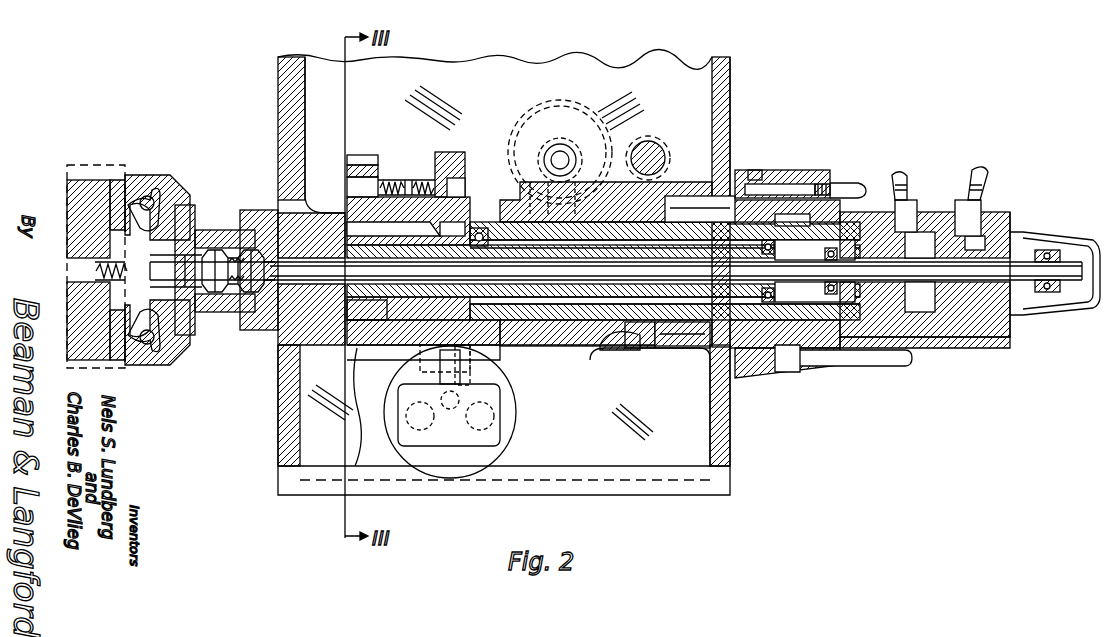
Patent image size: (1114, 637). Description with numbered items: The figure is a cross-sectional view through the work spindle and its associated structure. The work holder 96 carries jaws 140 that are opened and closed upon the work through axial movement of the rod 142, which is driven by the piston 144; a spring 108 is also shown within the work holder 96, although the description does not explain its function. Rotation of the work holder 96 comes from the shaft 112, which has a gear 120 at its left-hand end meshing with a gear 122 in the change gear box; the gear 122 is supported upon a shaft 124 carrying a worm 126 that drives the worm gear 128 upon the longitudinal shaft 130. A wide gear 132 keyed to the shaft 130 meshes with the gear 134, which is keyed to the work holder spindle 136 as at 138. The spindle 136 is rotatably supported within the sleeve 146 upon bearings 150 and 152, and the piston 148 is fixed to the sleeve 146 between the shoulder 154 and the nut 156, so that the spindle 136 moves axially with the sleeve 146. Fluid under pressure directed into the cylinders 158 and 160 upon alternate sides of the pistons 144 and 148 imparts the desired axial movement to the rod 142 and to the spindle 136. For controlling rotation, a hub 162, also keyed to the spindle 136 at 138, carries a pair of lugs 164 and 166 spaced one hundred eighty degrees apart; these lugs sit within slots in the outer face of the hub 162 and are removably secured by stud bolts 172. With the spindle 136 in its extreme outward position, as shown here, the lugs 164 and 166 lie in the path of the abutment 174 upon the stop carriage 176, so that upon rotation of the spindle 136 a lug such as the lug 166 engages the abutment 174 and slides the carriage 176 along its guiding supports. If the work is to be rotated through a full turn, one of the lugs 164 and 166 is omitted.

The work holder 96 is at (150, 172).
The spring 108 is at (85, 266).
The shaft 112 is at (662, 152).
The gear 120 is at (645, 136).
The gear 122 is at (515, 120).
The shaft 124 is at (575, 160).
The worm 126 is at (552, 148).
The worm gear 128 is at (575, 178).
The longitudinal shaft 130 is at (530, 196).
The wide gear 132 is at (340, 330).
The gear 134 is at (362, 155).
The work holder spindle 136 is at (250, 312).
The key 138 is at (465, 214).
The jaws 140 is at (67, 195).
The rod 142 is at (1030, 300).
The piston 144 is at (955, 200).
The sleeve 146 is at (580, 346).
The piston 148 is at (640, 348).
The bearing 150 is at (488, 228).
The bearing 152 is at (790, 262).
The shoulder 154 is at (600, 350).
The nut 156 is at (680, 348).
The cylinder 158 is at (690, 205).
The cylinder 160 is at (912, 200).
The hub 162 is at (420, 180).
The lug 164 is at (455, 152).
The lug 166 is at (470, 375).
The stud bolts 172 is at (465, 190).
The abutment 174 is at (440, 365).
The stop carriage 176 is at (500, 430).